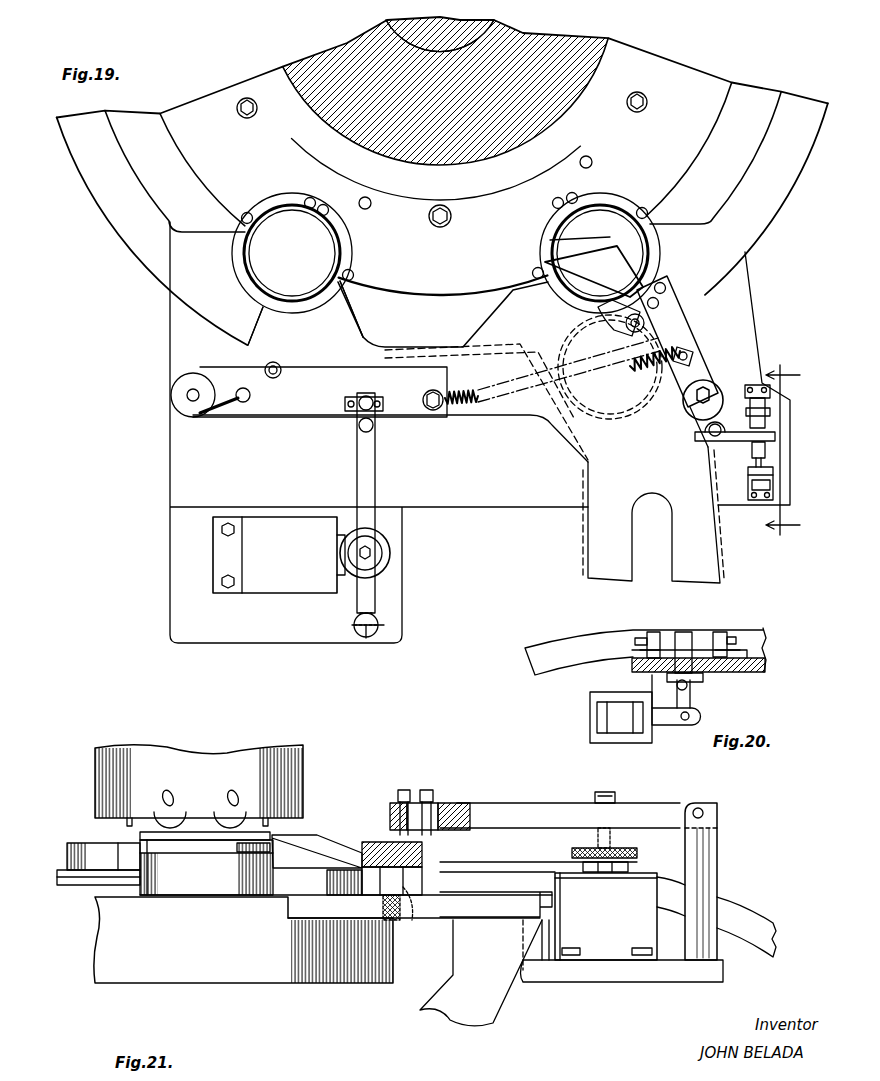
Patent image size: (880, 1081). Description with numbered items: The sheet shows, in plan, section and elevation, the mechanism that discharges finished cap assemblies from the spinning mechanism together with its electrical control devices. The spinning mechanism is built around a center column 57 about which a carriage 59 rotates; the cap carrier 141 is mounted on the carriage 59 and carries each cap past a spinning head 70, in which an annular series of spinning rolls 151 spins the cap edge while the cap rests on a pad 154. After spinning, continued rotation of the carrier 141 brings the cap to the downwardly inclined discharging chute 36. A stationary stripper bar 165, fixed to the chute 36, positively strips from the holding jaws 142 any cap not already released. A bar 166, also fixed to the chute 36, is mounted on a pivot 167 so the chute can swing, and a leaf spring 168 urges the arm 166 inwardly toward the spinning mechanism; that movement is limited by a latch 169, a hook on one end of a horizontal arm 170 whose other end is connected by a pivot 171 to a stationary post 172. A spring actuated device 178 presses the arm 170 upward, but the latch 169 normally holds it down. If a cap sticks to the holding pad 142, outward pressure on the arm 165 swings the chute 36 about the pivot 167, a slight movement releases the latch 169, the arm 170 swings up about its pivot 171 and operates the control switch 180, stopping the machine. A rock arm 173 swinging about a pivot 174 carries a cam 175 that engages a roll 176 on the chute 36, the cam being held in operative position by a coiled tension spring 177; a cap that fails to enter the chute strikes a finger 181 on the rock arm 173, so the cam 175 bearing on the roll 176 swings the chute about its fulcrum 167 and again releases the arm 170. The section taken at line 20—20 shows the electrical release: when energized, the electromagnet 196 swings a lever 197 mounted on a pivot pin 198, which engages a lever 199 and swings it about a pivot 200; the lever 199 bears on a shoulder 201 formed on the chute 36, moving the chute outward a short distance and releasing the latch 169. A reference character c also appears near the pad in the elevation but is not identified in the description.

In FIG. 19, the center column 57 is at (480, 20).
In FIG. 19, the carriage 59 is at (587, 30).
In FIG. 21, the carriage 59 is at (112, 940).
In FIG. 19, the cap carrier 141 is at (740, 150).
In FIG. 21, the cap carrier 141 is at (88, 875).
In FIG. 19, the pad 154 is at (640, 245).
In FIG. 21, the pad 154 is at (188, 883).
In FIG. 19, the finger 181 is at (597, 243).
In FIG. 19, the rock arm 173 is at (687, 337).
In FIG. 19, the pivot 174 is at (718, 393).
In FIG. 19, the cam 175 is at (617, 333).
In FIG. 19, the roll 176 is at (630, 336).
In FIG. 19, the coiled tension spring 177 is at (476, 406).
In FIG. 19, the stripper bar 165 is at (268, 342).
In FIG. 21, the stripper bar 165 is at (340, 838).
In FIG. 19, the bar 166 is at (323, 410).
In FIG. 21, the bar 166 is at (424, 850).
In FIG. 19, the pivot 167 is at (188, 396).
In FIG. 21, the pivot 167 is at (408, 914).
In FIG. 19, the leaf spring 168 is at (236, 410).
In FIG. 19, the latch 169 is at (368, 395).
In FIG. 21, the latch 169 is at (392, 822).
In FIG. 19, the horizontal arm 170 is at (367, 462).
In FIG. 21, the horizontal arm 170 is at (515, 812).
In FIG. 19, the spring actuated device 178 is at (387, 549).
In FIG. 21, the spring actuated device 178 is at (627, 866).
In FIG. 19, the control switch 180 is at (298, 555).
In FIG. 21, the control switch 180 is at (616, 913).
In FIG. 19, the pivot 171 is at (384, 625).
In FIG. 21, the pivot 171 is at (702, 808).
In FIG. 19, the stationary post 172 is at (374, 633).
In FIG. 21, the stationary post 172 is at (707, 860).
In FIG. 19, the discharging chute 36 is at (600, 552).
In FIG. 20, the discharging chute 36 is at (570, 660).
In FIG. 21, the discharging chute 36 is at (757, 915).
In FIG. 19, the shoulder 201 is at (700, 444).
In FIG. 19, the pivot 200 is at (718, 438).
In FIG. 20, the pivot 200 is at (725, 672).
In FIG. 19, the lever 199 is at (777, 433).
In FIG. 20, the lever 199 is at (700, 650).
In FIG. 19, the lever 197 is at (775, 446).
In FIG. 20, the lever 197 is at (683, 632).
In FIG. 19, the section line 20 is at (793, 450).
In FIG. 20, the pivot pin 198 is at (692, 688).
In FIG. 20, the electromagnet 196 is at (619, 727).
In FIG. 21, the spinning head 70 is at (200, 760).
In FIG. 21, the spinning rolls 151 is at (225, 812).
In FIG. 21, the jaws 142 is at (265, 835).
In FIG. 21, the clearance c is at (195, 868).